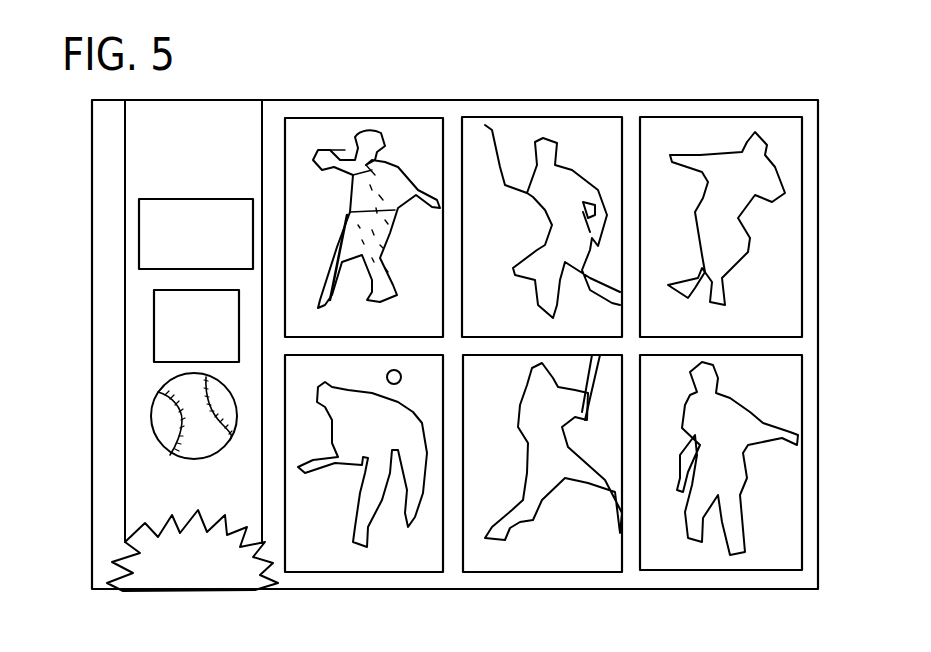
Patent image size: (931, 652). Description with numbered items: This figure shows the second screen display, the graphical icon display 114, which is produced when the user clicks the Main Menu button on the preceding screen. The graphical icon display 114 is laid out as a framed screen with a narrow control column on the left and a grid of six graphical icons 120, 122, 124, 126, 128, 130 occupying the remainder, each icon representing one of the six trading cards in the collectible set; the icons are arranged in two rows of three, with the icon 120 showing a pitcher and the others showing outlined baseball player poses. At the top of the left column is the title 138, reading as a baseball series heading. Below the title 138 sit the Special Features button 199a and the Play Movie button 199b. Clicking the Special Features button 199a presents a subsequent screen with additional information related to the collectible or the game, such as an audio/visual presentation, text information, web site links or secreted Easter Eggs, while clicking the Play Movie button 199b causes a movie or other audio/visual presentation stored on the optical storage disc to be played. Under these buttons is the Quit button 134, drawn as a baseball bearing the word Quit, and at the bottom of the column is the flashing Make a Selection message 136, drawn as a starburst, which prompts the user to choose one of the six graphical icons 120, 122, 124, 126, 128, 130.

The graphical icon display 114 is at (487, 80).
The graphical icon 120 is at (325, 130).
The graphical icon 122 is at (577, 145).
The graphical icon 124 is at (721, 199).
The graphical icon 126 is at (323, 553).
The graphical icon 128 is at (497, 553).
The graphical icon 130 is at (677, 552).
The Quit button 134 is at (152, 421).
The Make a Selection message 136 is at (160, 585).
The title 138 is at (156, 182).
The Special Features button 199a is at (139, 241).
The Play Movie button 199b is at (154, 334).